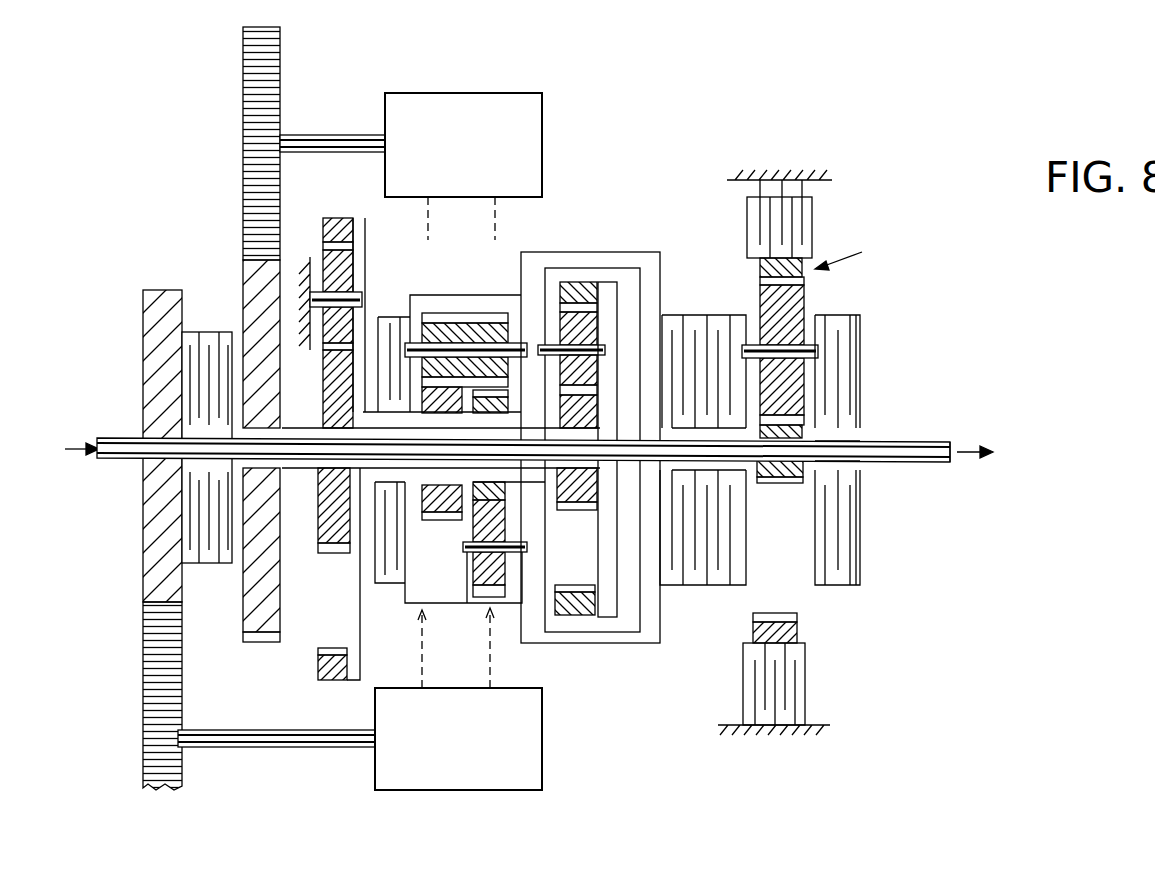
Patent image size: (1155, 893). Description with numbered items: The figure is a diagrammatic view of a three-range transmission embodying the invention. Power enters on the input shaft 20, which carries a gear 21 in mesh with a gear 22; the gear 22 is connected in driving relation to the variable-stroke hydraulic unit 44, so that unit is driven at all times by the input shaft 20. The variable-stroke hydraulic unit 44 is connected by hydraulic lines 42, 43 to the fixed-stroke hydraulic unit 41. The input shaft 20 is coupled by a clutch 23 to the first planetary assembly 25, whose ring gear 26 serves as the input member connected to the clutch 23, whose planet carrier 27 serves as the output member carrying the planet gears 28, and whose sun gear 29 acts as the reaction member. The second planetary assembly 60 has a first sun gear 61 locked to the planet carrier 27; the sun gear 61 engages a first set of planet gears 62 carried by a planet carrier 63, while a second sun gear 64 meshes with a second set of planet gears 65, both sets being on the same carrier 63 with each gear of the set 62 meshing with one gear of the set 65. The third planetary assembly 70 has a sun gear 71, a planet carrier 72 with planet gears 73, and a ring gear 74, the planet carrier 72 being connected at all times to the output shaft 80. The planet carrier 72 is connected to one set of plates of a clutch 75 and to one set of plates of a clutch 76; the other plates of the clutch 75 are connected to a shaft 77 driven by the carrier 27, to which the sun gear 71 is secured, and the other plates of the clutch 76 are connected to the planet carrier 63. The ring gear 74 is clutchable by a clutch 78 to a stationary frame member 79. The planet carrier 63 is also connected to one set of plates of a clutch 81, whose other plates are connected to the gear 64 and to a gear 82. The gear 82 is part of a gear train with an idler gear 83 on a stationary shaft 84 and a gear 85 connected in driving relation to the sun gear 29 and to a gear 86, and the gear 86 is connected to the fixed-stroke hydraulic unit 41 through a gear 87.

The input shaft 20 is at (125, 438).
The gear 21 is at (145, 552).
The gear 22 is at (143, 676).
The clutch 23 is at (216, 565).
The first planetary assembly 25 is at (589, 273).
The ring gear 26 is at (573, 283).
The planet carrier 27 is at (545, 340).
The planet gears 28 is at (598, 330).
The sun gear 29 is at (607, 430).
The fixed-stroke hydraulic unit 41 is at (501, 93).
The hydraulic line 42 is at (428, 218).
The hydraulic line 43 is at (495, 222).
The variable-stroke hydraulic unit 44 is at (542, 729).
The second planetary assembly 60 is at (455, 305).
The first sun gear 61 is at (500, 409).
The first set of planet gears 62 is at (505, 530).
The planet carrier 63 is at (517, 343).
The second sun gear 64 is at (437, 403).
The second set of planet gears 65 is at (506, 381).
The third planetary assembly 70 is at (854, 250).
The sun gear 71 is at (768, 483).
The planet carrier 72 is at (800, 345).
The planet gears 73 is at (760, 300).
The ring gear 74 is at (768, 268).
The clutch 75 is at (860, 319).
The clutch 76 is at (703, 315).
The shaft 77 is at (848, 440).
The clutch 78 is at (812, 216).
The stationary frame member 79 is at (797, 180).
The output shaft 80 is at (922, 442).
The clutch 81 is at (400, 317).
The gear 82 is at (341, 218).
The idler gear 83 is at (329, 263).
The stationary shaft 84 is at (315, 307).
The gear 85 is at (326, 399).
The gear 86 is at (280, 590).
The gear 87 is at (247, 178).